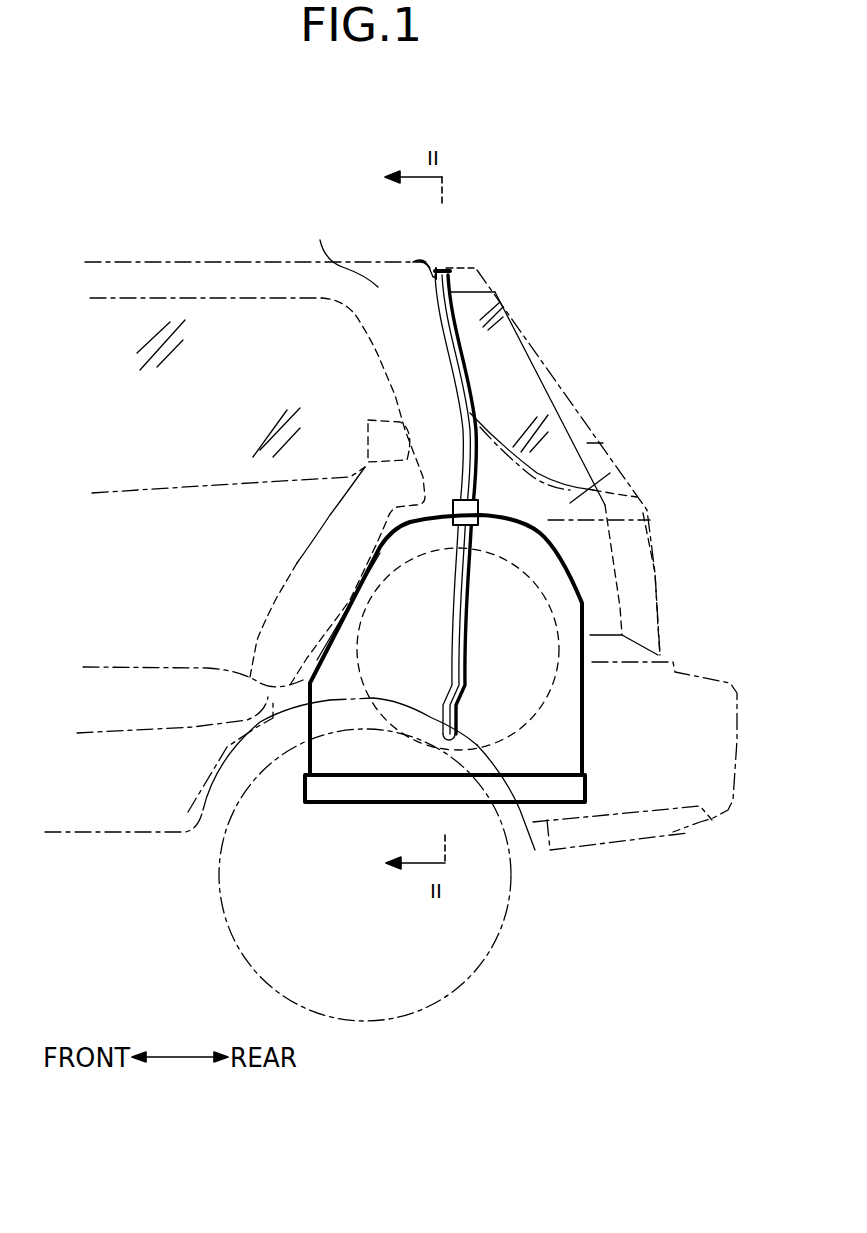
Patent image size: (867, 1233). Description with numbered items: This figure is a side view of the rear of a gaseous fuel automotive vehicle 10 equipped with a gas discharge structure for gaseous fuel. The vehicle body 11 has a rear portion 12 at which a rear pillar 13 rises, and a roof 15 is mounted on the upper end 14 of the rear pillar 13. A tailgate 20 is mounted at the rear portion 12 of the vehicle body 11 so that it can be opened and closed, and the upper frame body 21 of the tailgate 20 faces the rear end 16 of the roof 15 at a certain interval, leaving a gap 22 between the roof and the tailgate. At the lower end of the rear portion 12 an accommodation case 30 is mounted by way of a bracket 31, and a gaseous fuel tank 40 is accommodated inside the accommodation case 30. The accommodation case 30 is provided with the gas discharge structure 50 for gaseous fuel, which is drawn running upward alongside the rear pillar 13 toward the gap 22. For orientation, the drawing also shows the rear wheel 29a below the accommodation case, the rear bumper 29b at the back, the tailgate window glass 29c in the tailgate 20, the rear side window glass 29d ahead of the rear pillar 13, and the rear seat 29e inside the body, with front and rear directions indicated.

The gaseous fuel automotive vehicle 10 is at (684, 242).
The vehicle body 11 is at (528, 290).
The rear portion 12 is at (610, 492).
The rear pillar 13 is at (427, 398).
The upper end 14 is at (357, 449).
The roof 15 is at (190, 266).
The rear end 16 is at (425, 260).
The tailgate 20 is at (555, 368).
The upper frame body 21 is at (452, 263).
The gap 22 is at (428, 260).
The rear wheel 29a is at (515, 903).
The rear bumper 29b is at (702, 824).
The tailgate window glass 29c is at (610, 437).
The rear side window glass 29d is at (172, 408).
The rear seat 29e is at (150, 663).
The accommodation case 30 is at (565, 570).
The bracket 31 is at (557, 773).
The gaseous fuel tank 40 is at (560, 622).
The gas discharge structure 50 is at (466, 342).